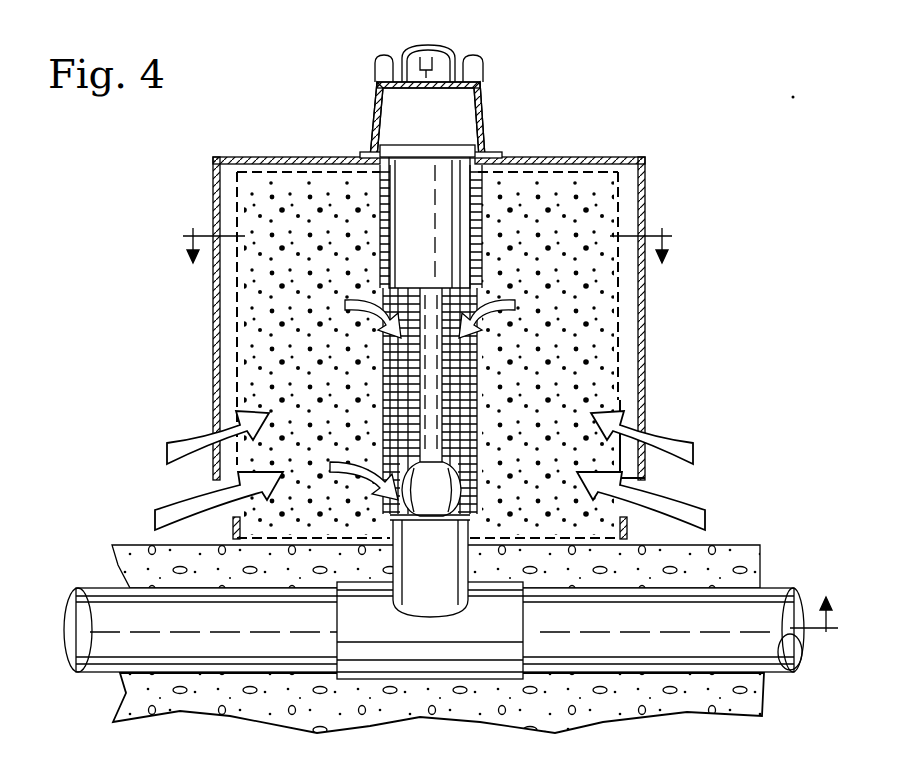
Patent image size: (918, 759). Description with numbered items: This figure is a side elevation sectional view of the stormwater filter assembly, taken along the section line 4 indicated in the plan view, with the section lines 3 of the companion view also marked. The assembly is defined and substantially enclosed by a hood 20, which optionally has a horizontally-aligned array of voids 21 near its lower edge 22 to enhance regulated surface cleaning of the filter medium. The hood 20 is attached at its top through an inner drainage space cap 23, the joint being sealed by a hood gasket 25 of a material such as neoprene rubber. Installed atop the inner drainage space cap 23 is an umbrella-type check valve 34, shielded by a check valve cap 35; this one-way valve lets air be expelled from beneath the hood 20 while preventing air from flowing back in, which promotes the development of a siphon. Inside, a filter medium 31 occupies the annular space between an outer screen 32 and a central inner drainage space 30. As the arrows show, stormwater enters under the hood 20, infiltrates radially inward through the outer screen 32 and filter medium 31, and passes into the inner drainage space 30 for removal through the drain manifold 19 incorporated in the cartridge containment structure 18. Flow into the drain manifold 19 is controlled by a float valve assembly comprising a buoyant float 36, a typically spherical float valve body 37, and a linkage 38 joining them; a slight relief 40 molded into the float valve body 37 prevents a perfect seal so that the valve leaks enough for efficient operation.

The cartridge containment structure 18 is at (732, 545).
The drain manifold 19 is at (660, 625).
The hood 20 is at (213, 222).
The voids 21 is at (213, 440).
The lower edge 22 is at (214, 497).
The inner drainage space cap 23 is at (487, 130).
The hood gasket 25 is at (366, 152).
The inner drainage space 30 is at (446, 378).
The filter medium 31 is at (600, 358).
The outer screen 32 is at (620, 210).
The check valve 34 is at (426, 47).
The check valve cap 35 is at (438, 47).
The buoyant float 36 is at (398, 222).
The float valve body 37 is at (415, 501).
The linkage 38 is at (248, 358).
The relief 40 is at (396, 490).
The section line 3 is at (427, 261).
The section line 4 is at (814, 599).